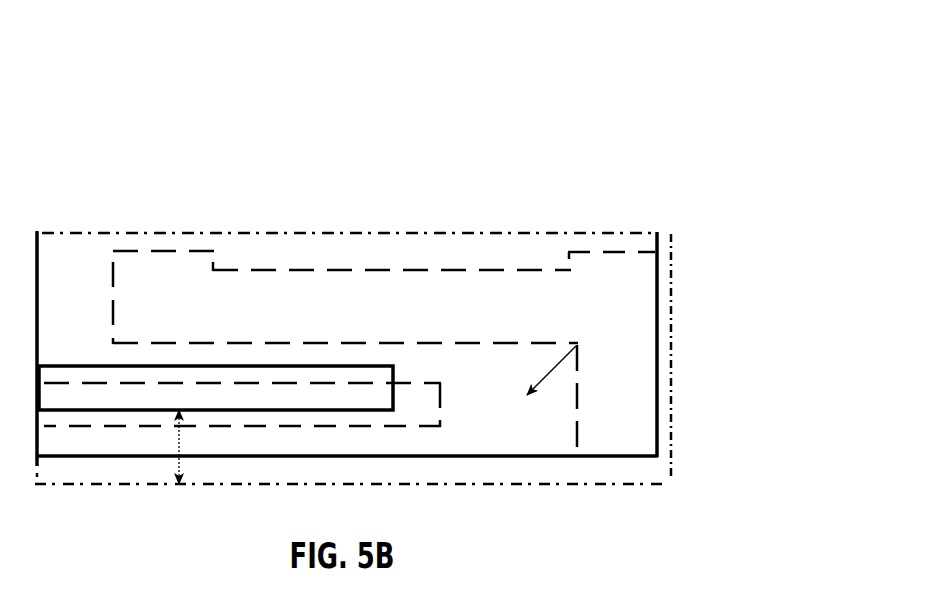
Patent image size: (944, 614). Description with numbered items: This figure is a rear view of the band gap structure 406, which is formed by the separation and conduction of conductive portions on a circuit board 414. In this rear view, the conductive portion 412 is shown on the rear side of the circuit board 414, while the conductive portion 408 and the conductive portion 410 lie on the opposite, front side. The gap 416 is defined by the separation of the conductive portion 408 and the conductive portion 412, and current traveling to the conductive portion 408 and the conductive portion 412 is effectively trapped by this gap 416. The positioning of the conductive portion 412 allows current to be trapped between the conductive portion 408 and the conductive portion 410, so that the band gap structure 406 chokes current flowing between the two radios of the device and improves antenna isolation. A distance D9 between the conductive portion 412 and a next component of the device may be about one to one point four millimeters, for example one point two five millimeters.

The band gap structure 406 is at (792, 34).
The conductive portion 408 is at (175, 250).
The conductive portion 410 is at (440, 383).
The conductive portion 412 is at (375, 366).
The circuit board 414 is at (518, 373).
The gap 416 is at (579, 344).
The distance D9 is at (177, 447).